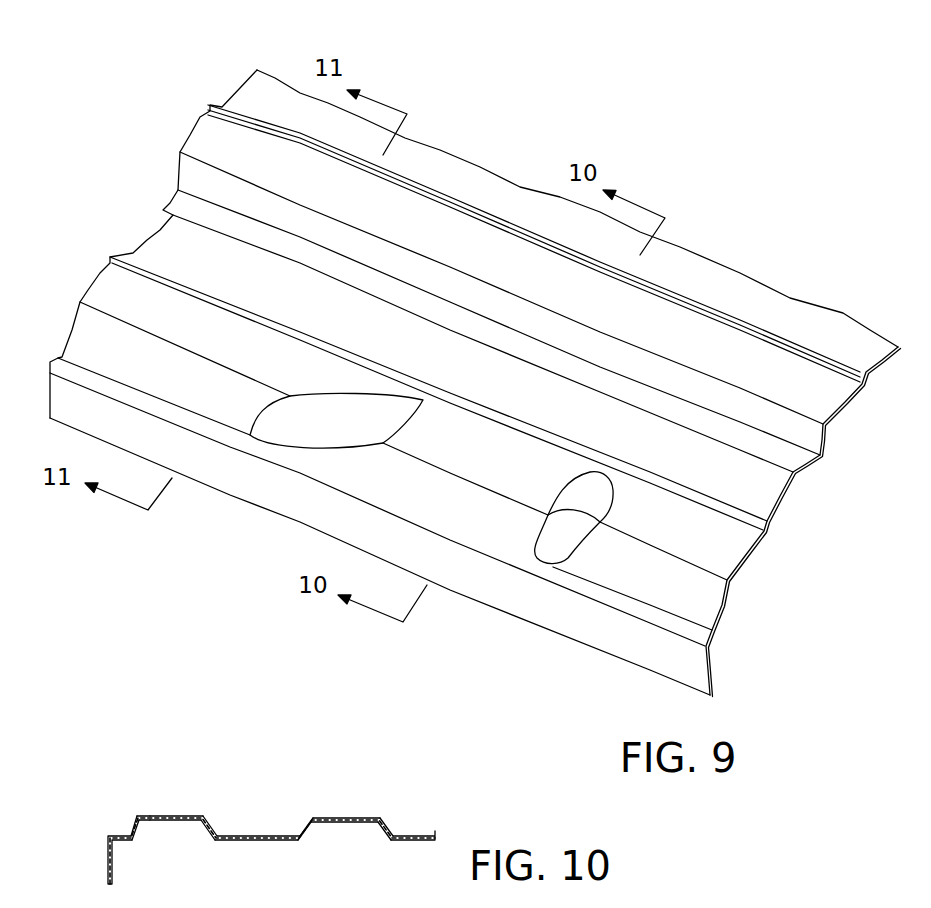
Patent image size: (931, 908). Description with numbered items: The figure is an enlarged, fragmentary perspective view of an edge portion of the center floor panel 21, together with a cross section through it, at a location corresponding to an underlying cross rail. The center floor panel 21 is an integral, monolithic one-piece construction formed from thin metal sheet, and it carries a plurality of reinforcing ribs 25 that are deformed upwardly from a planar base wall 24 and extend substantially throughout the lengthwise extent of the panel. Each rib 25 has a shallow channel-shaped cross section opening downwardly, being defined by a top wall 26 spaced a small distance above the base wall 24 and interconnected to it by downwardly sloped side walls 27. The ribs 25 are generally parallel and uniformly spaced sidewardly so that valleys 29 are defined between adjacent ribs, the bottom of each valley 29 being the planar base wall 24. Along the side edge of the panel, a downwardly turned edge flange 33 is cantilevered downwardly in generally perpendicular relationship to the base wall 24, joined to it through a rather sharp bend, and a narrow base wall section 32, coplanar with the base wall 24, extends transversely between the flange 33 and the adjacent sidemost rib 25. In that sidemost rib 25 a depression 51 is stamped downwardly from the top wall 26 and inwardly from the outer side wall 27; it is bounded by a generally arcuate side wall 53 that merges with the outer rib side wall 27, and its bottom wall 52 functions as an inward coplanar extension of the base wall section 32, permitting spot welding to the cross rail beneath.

In FIG. 9, the center floor panel 21 is at (745, 262).
In FIG. 10, the center floor panel 21 is at (275, 794).
In FIG. 9, the planar base wall 24 is at (752, 487).
In FIG. 10, the planar base wall 24 is at (408, 833).
In FIG. 9, the reinforcing ribs 25 is at (222, 133).
In FIG. 10, the reinforcing ribs 25 is at (163, 819).
In FIG. 9, the top wall 26 is at (113, 287).
In FIG. 10, the top wall 26 is at (157, 817).
In FIG. 9, the side walls 27 is at (100, 343).
In FIG. 10, the side walls 27 is at (205, 830).
In FIG. 9, the valleys 29 is at (176, 237).
In FIG. 10, the valleys 29 is at (250, 828).
In FIG. 9, the base wall section 32 is at (623, 605).
In FIG. 9, the edge flange 33 is at (277, 498).
In FIG. 10, the edge flange 33 is at (107, 863).
In FIG. 9, the depression 51 is at (507, 492).
In FIG. 10, the depression 51 is at (133, 832).
In FIG. 9, the bottom wall 52 is at (423, 550).
In FIG. 10, the bottom wall 52 is at (140, 836).
In FIG. 9, the side wall 53 is at (337, 423).